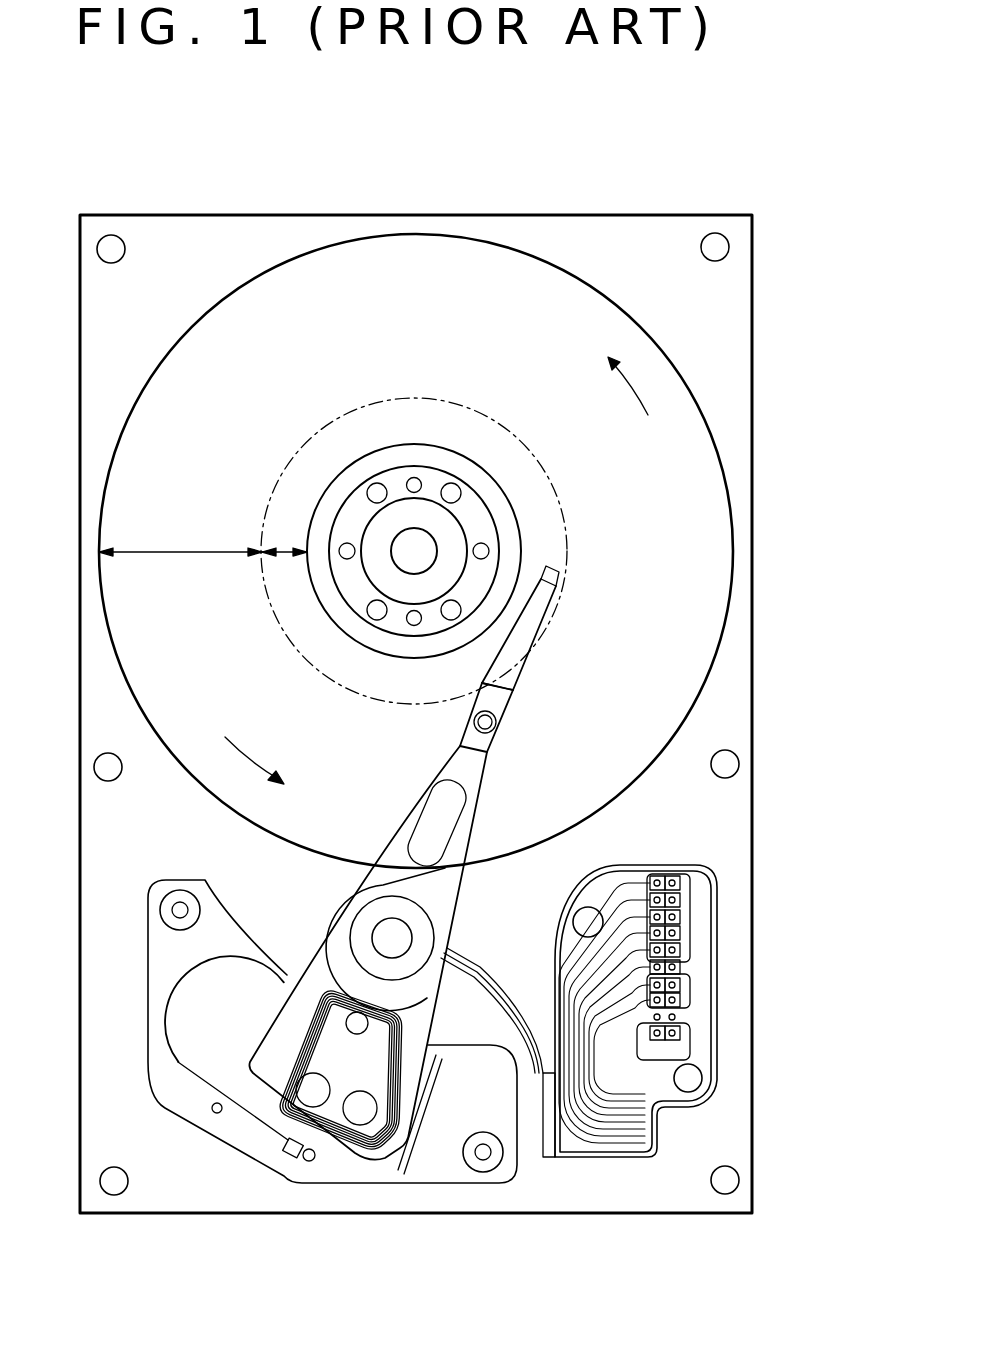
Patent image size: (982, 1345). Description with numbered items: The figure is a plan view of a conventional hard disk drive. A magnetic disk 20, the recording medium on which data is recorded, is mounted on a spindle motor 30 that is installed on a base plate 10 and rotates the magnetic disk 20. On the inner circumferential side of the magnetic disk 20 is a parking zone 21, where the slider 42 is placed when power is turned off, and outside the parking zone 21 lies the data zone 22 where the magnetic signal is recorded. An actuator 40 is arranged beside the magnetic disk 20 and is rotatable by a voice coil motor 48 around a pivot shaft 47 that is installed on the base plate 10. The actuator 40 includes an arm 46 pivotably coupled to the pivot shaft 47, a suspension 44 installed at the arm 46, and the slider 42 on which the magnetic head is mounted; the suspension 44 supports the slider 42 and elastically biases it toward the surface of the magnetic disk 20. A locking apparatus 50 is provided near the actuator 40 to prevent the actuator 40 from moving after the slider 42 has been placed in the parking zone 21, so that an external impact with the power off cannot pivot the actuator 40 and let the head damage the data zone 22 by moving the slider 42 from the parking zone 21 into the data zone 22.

The base plate 10 is at (732, 334).
The magnetic disk 20 is at (705, 606).
The parking zone 21 is at (288, 552).
The data zone 22 is at (183, 552).
The spindle motor 30 is at (473, 511).
The actuator 40 is at (318, 908).
The slider 42 is at (561, 585).
The suspension 44 is at (523, 633).
The arm 46 is at (432, 790).
The pivot shaft 47 is at (397, 938).
The voice coil motor 48 is at (195, 1066).
The locking apparatus 50 is at (288, 1147).